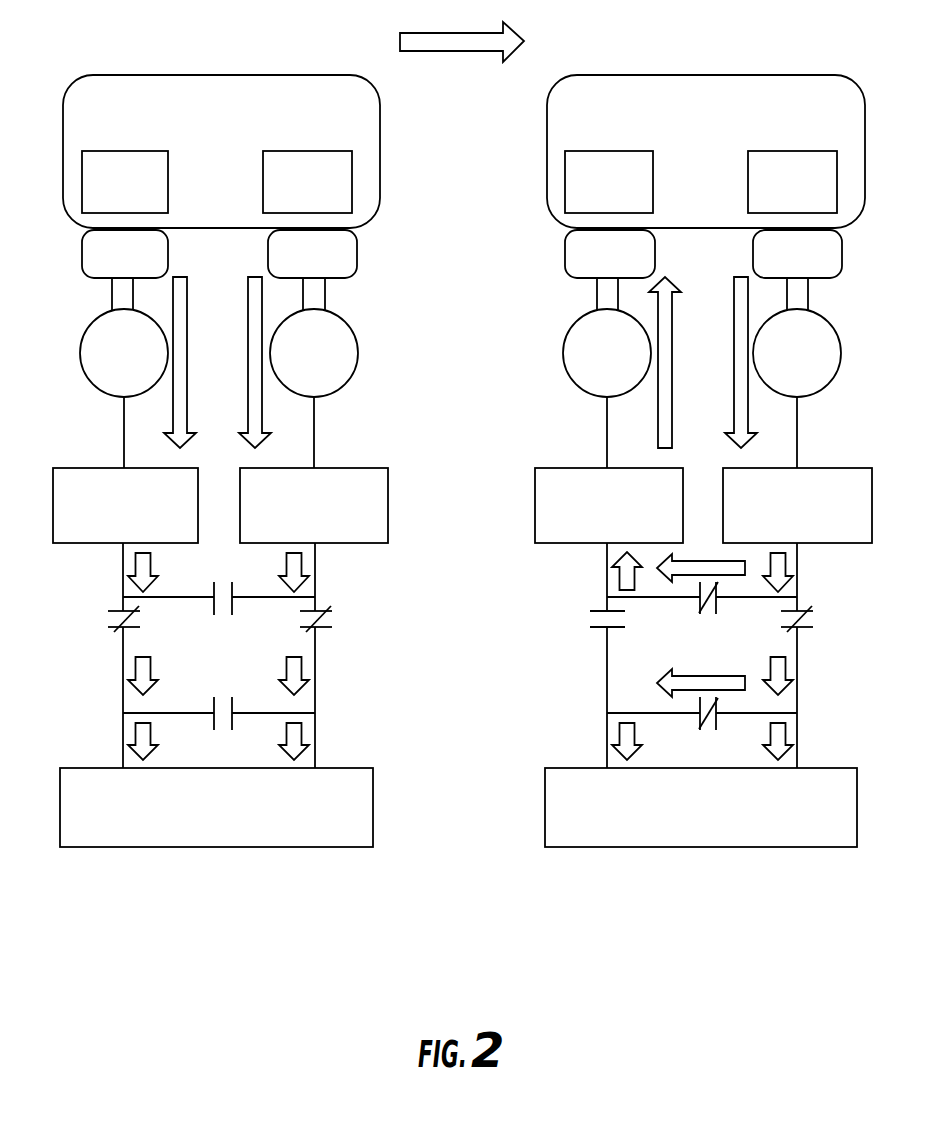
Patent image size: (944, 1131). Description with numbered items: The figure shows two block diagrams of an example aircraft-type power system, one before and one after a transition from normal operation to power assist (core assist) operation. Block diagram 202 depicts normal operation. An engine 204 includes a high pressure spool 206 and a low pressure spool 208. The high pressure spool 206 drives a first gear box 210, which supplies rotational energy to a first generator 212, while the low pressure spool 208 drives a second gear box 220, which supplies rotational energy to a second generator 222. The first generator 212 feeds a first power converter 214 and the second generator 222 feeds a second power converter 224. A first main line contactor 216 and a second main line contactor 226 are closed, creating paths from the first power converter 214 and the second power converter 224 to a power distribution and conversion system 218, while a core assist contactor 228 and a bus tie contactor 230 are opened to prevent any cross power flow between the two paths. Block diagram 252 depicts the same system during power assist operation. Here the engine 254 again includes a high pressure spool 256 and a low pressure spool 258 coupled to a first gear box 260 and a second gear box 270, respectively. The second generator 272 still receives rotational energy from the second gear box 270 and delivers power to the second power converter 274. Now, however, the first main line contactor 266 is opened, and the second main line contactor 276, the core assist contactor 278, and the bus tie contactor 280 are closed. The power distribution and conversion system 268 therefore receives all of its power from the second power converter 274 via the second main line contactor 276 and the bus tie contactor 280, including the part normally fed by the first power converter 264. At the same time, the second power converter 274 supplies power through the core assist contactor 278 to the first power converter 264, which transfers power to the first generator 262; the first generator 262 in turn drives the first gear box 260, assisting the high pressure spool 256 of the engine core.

The block diagram 202 is at (219, 435).
The engine 204 is at (202, 134).
The high pressure spool 206 is at (105, 197).
The low pressure spool 208 is at (288, 197).
The first gear box 210 is at (105, 268).
The first generator 212 is at (104, 368).
The first power converter 214 is at (105, 518).
The first main line contactor 216 is at (95, 617).
The power distribution and conversion system 218 is at (197, 822).
The second gear box 220 is at (293, 268).
The second generator 222 is at (294, 368).
The second power converter 224 is at (295, 518).
The second main line contactor 226 is at (340, 617).
The core assist contactor 228 is at (219, 618).
The bus tie contactor 230 is at (219, 730).
The block diagram 252 is at (702, 435).
The engine 254 is at (685, 134).
The high pressure spool 256 is at (588, 197).
The low pressure spool 258 is at (772, 197).
The first gear box 260 is at (588, 268).
The first generator 262 is at (587, 368).
The first power converter 264 is at (588, 518).
The first main line contactor 266 is at (579, 617).
The power distribution and conversion system 268 is at (680, 822).
The second gear box 270 is at (777, 268).
The second generator 272 is at (777, 368).
The second power converter 274 is at (778, 518).
The second main line contactor 276 is at (822, 617).
The core assist contactor 278 is at (702, 618).
The bus tie contactor 280 is at (702, 730).